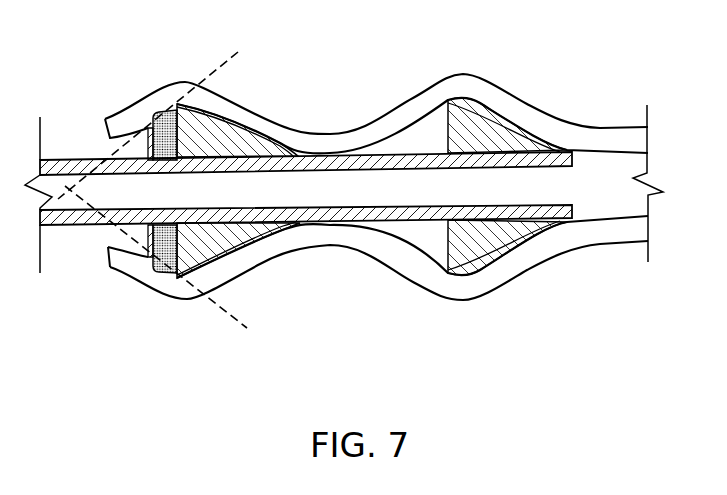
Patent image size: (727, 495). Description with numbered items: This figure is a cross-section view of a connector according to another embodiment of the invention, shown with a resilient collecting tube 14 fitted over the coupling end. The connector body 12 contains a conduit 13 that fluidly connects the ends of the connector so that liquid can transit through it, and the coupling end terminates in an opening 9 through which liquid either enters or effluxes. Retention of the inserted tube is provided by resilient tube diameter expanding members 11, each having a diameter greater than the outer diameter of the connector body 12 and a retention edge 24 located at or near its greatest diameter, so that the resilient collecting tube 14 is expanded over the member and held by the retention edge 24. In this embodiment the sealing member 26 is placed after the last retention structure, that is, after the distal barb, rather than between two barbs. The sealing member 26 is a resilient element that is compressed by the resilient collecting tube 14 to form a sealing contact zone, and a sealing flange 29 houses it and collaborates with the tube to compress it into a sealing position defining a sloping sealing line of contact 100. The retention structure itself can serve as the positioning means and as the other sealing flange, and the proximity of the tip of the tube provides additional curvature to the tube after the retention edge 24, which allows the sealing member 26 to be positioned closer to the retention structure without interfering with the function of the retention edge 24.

The opening 9 is at (567, 185).
The resilient tube diameter expanding member 11 is at (505, 128).
The connector body 12 is at (68, 159).
The conduit 13 is at (63, 205).
The resilient collecting tube 14 is at (327, 140).
The retention edge 24 is at (448, 99).
The sealing member 26 is at (162, 111).
The sealing flange 29 is at (130, 114).
The sloping sealing line of contact 100 is at (237, 52).